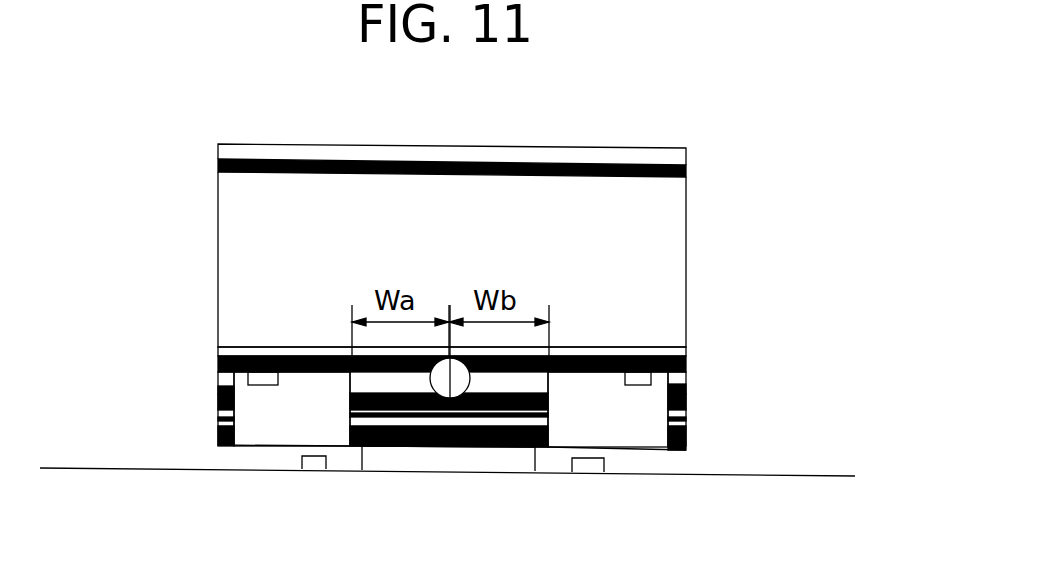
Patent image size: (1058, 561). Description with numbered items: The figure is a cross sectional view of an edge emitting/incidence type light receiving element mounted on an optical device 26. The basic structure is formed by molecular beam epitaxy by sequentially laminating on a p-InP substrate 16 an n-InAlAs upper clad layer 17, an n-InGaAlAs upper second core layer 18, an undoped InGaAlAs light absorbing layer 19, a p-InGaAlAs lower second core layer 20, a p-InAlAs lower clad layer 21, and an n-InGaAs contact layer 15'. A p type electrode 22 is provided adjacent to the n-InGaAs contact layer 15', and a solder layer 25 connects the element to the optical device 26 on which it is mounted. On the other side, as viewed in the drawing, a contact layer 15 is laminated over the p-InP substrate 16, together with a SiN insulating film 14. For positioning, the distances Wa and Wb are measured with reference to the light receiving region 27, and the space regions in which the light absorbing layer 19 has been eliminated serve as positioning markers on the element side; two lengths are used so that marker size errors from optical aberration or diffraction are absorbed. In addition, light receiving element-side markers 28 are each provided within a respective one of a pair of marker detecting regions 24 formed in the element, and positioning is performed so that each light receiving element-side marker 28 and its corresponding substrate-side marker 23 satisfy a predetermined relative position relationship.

The SiN insulating film 14 is at (686, 149).
The contact layer 15 is at (500, 169).
The p-InP substrate 16 is at (676, 212).
The n-InAlAs upper clad layer 17 is at (664, 352).
The n-InGaAlAs upper 2nd core layer 18 is at (686, 372).
The undoped InGaAlAs light absorbing layer 19 is at (686, 386).
The p-InGaAlAs lower 2nd core layer 20 is at (686, 403).
The p-InAlAs lower clad layer 21 is at (686, 418).
The n-InGaAs contact layer 15' is at (521, 448).
The p type electrode 22 is at (673, 448).
The substrate-side marker 23 is at (310, 460).
The marker detecting region 24 is at (308, 397).
The solder layer 25 is at (493, 460).
The optical device 26 is at (80, 468).
The light receiving region 27 is at (431, 382).
The light receiving element-side marker 28 is at (248, 375).